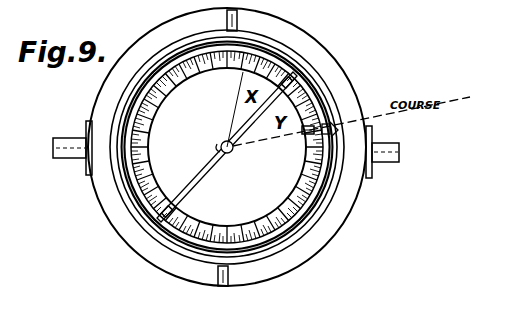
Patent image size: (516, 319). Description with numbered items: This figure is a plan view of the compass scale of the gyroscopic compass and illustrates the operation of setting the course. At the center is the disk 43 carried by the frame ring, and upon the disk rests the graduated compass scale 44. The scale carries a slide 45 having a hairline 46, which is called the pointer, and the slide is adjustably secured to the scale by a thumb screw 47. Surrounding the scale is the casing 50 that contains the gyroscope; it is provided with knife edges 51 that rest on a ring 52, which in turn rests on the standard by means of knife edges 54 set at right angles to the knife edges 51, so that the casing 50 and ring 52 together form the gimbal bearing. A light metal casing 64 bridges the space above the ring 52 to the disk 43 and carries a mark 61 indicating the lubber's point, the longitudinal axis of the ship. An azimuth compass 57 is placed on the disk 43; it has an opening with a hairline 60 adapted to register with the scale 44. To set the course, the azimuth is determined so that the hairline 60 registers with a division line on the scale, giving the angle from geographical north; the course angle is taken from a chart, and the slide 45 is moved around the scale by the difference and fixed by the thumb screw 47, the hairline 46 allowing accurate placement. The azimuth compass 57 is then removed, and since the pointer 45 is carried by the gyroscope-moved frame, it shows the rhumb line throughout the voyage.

The disk 43 is at (170, 176).
The graduated compass scale 44 is at (145, 136).
The slide 45 is at (316, 112).
The hairline 46 is at (336, 128).
The thumb screw 47 is at (299, 141).
The casing 50 is at (134, 209).
The knife edges 51 is at (228, 15).
The ring 52 is at (312, 242).
The knife edges 54 is at (67, 152).
The azimuth compass 57 is at (222, 173).
The hairline 60 is at (288, 84).
The mark 61 is at (330, 124).
The light metal casing 64 is at (130, 108).